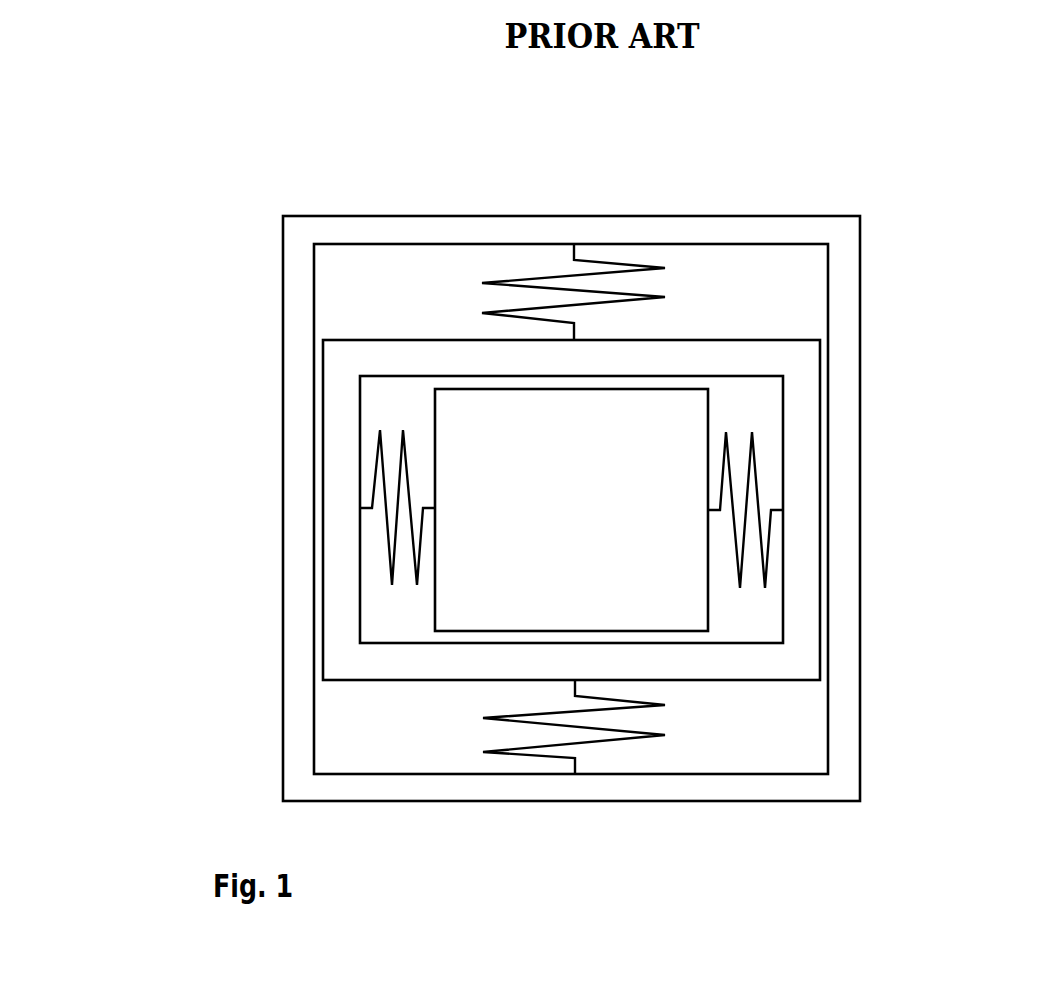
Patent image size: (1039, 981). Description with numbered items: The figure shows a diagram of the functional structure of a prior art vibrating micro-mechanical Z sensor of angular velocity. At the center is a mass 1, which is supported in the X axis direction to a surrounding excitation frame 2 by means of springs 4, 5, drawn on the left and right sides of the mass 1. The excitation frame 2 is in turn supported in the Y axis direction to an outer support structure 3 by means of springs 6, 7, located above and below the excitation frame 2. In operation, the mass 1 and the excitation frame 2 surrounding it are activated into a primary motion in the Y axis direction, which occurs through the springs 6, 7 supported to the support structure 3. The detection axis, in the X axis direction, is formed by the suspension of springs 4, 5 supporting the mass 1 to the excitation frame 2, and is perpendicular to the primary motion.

The mass 1 is at (708, 412).
The excitation frame 2 is at (725, 338).
The support structure 3 is at (771, 216).
The spring 4 is at (380, 446).
The spring 5 is at (755, 472).
The spring 6 is at (637, 265).
The spring 7 is at (645, 735).